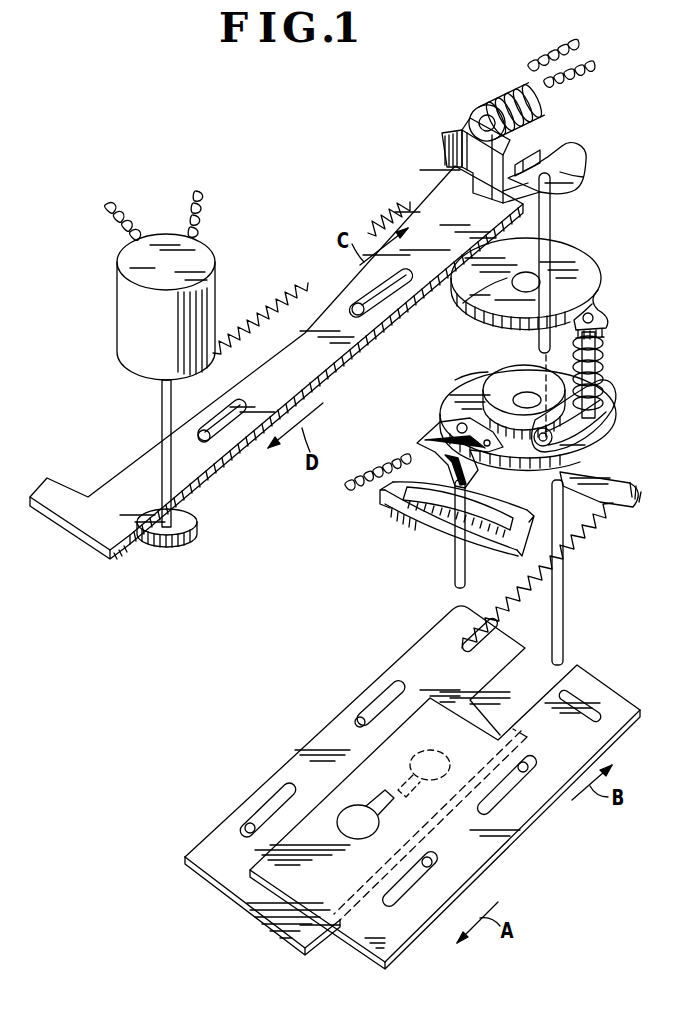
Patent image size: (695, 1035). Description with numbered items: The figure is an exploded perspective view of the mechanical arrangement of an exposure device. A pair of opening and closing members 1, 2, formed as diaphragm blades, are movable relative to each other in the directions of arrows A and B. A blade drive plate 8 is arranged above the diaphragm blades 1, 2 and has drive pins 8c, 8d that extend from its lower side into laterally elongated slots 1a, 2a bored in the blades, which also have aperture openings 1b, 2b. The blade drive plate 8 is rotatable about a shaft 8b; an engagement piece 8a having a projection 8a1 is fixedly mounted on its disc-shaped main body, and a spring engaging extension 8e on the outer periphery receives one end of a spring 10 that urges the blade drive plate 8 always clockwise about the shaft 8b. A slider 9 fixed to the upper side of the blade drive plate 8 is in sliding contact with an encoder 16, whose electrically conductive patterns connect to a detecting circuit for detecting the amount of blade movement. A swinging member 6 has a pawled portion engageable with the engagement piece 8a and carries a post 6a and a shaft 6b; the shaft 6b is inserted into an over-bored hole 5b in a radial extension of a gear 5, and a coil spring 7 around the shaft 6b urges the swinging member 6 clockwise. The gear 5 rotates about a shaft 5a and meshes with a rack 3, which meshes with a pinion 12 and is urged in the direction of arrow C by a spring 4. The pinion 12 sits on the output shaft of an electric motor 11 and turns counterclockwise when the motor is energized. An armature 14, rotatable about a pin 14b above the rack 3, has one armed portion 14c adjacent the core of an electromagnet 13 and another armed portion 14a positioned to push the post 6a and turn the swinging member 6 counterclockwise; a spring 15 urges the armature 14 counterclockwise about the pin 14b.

The opening and closing member 1 is at (612, 726).
The laterally elongated slot 1a is at (584, 700).
The aperture opening 1b is at (350, 826).
The opening and closing member 2 is at (350, 722).
The laterally elongated slot 2a is at (468, 640).
The aperture opening 2b is at (405, 766).
The rack 3 is at (343, 335).
The spring 4 is at (272, 298).
The gear 5 is at (568, 262).
The shaft 5a is at (473, 307).
The over-bored hole 5b is at (600, 317).
The swinging member 6 is at (608, 412).
The post 6a is at (552, 232).
The shaft 6b is at (600, 355).
The coil spring 7 is at (598, 373).
The blade drive plate 8 is at (452, 410).
The engagement piece 8a is at (493, 403).
The projection 8a1 is at (552, 437).
The shaft 8b is at (517, 398).
The drive pin 8c is at (563, 613).
The drive pin 8d is at (455, 571).
The spring engaging extension 8e is at (637, 496).
The slider 9 is at (425, 440).
The spring 10 is at (578, 546).
The electric motor 11 is at (130, 318).
The pinion 12 is at (197, 522).
The electromagnet 13 is at (496, 102).
The armature 14 is at (520, 146).
The armed portion 14a is at (584, 164).
The pin 14b is at (528, 158).
The armed portion 14c is at (446, 142).
The spring 15 is at (396, 210).
The encoder 16 is at (396, 508).